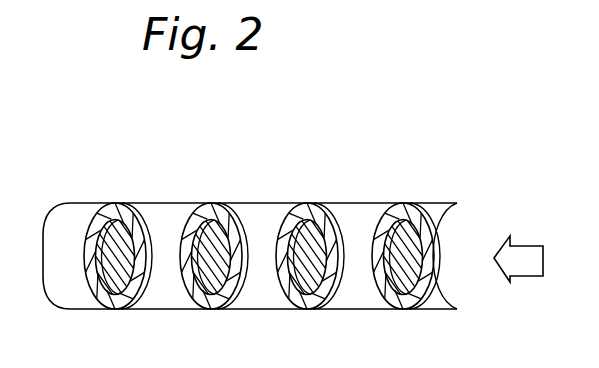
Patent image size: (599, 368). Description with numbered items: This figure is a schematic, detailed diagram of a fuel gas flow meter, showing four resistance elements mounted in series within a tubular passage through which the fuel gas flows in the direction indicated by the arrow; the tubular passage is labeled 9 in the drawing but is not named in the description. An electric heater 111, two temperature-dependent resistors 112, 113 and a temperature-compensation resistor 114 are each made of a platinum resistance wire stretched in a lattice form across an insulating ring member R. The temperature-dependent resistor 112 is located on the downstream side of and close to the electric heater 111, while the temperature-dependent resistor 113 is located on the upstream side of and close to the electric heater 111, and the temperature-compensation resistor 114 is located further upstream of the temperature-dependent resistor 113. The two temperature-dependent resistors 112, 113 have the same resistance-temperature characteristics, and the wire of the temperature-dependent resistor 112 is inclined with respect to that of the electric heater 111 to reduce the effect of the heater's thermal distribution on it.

The tube 9 is at (55, 303).
The temperature-dependent resistor 112 is at (128, 207).
The electric heater 111 is at (233, 207).
The temperature-dependent resistor 113 is at (330, 207).
The temperature-compensation resistor 114 is at (432, 207).
The insulating ring member R is at (97, 212).